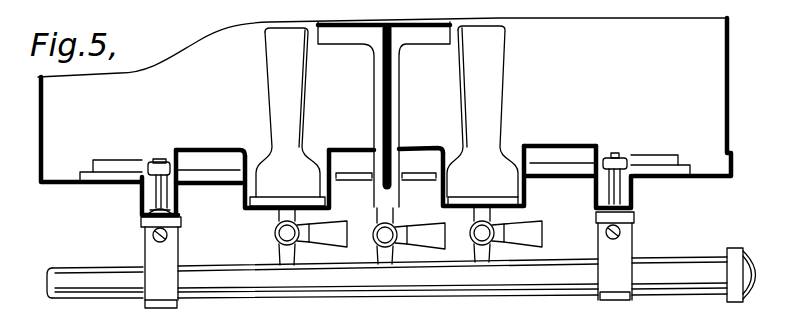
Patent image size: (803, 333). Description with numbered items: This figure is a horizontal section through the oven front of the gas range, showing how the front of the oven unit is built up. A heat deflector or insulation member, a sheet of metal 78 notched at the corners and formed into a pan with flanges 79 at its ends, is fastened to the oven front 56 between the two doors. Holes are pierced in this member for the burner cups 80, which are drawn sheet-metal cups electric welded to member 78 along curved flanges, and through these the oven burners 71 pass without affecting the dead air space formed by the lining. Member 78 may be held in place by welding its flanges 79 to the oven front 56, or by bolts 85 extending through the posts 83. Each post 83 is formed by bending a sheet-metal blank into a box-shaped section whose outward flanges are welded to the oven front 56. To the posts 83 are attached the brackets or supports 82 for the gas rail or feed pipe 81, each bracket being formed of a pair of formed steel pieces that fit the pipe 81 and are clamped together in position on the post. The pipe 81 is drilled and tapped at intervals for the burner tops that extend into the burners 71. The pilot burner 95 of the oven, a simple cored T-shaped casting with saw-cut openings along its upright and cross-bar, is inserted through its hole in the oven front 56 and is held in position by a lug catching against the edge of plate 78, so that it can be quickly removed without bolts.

The oven front 56 is at (89, 185).
The oven burners 71 is at (298, 107).
The heat deflector sheet 78 is at (210, 149).
The flanges 79 is at (146, 166).
The burner cups 80 is at (332, 199).
The gas rail or feed pipe 81 is at (245, 268).
The brackets or supports 82 is at (177, 305).
The posts 83 is at (168, 203).
The bolts 85 is at (138, 208).
The pilot burner 95 is at (392, 100).